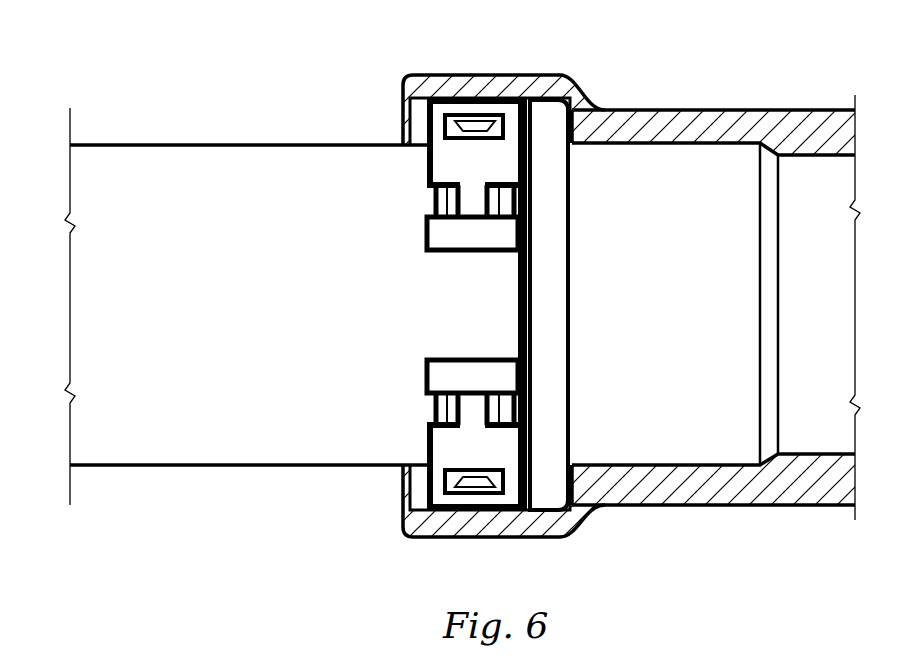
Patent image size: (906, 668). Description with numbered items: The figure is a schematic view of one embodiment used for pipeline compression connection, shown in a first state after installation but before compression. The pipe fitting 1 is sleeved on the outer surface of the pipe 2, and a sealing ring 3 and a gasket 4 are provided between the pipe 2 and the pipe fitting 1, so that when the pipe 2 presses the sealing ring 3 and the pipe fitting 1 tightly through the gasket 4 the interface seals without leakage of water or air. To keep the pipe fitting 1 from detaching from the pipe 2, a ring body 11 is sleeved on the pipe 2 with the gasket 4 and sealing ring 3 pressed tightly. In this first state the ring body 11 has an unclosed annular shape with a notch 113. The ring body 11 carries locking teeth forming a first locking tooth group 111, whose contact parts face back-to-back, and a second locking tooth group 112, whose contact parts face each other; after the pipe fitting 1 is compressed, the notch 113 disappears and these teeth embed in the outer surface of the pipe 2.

The pipe fitting 1 is at (752, 108).
The pipe 2 is at (310, 143).
The sealing ring 3 is at (572, 368).
The gasket 4 is at (528, 100).
The ring body 11 is at (455, 163).
The first locking tooth group 111 is at (437, 410).
The second locking tooth group 112 is at (475, 110).
The notch 113 is at (438, 257).